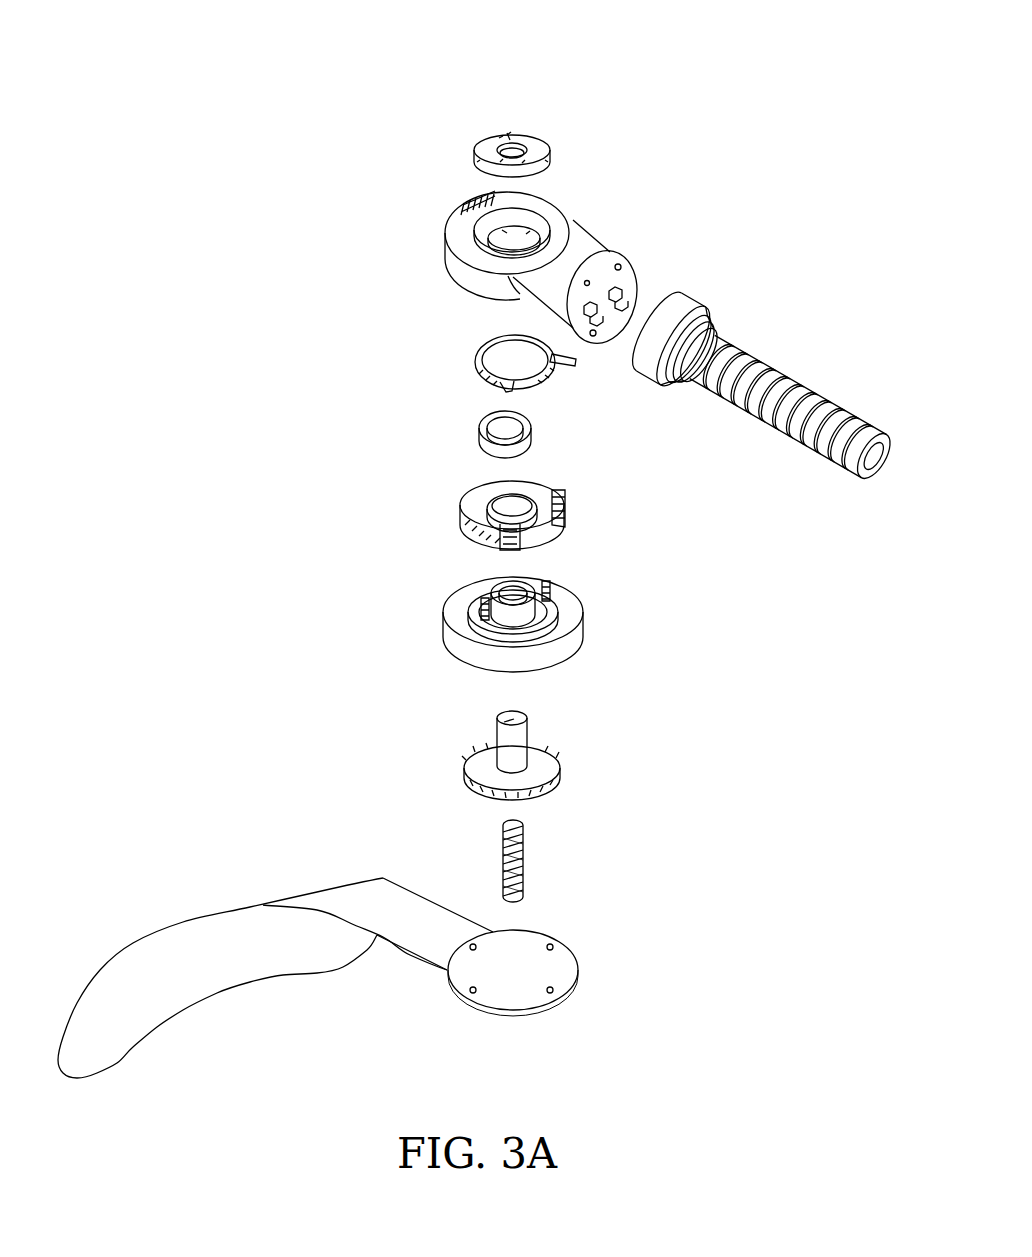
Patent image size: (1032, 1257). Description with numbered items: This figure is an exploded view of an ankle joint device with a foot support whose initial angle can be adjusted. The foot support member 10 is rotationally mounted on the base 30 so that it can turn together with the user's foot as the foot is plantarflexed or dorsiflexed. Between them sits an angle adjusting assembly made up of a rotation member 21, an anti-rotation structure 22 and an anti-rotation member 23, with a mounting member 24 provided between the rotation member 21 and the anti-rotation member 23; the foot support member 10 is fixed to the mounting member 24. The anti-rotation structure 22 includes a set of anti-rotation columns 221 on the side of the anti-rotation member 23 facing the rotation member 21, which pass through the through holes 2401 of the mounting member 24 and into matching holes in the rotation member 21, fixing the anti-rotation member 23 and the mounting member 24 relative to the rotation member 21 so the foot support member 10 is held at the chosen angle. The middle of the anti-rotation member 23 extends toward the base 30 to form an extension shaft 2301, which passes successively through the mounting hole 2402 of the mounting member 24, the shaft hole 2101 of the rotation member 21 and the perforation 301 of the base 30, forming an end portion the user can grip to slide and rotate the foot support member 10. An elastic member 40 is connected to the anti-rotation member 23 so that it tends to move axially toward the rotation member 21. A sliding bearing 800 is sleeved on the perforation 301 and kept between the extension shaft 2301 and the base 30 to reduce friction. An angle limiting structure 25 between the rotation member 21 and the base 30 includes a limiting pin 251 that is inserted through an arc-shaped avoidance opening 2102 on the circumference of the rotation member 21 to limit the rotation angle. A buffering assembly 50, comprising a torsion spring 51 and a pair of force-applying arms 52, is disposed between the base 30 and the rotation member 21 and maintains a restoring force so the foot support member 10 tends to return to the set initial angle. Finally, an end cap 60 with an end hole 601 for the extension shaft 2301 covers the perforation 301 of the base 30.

The foot support member 10 is at (278, 945).
The rotation member 21 is at (484, 462).
The shaft hole 2101 is at (495, 500).
The arc-shaped avoidance opening 2102 is at (470, 525).
The anti-rotation structure 22 is at (451, 715).
The anti-rotation columns 221 is at (467, 767).
The anti-rotation member 23 is at (502, 748).
The extension shaft 2301 is at (513, 733).
The mounting member 24 is at (566, 589).
The through holes 2401 is at (460, 610).
The mounting hole 2402 is at (493, 583).
The angle limiting structure 25 is at (651, 563).
The limiting pin 251 is at (492, 612).
The base 30 is at (598, 256).
The perforation 301 is at (527, 234).
The elastic member 40 is at (525, 863).
The buffering assembly 50 is at (680, 482).
The torsion spring 51 is at (556, 359).
The force-applying arms 52 is at (605, 497).
The end cap 60 is at (552, 150).
The end hole 601 is at (507, 132).
The sliding bearing 800 is at (488, 435).